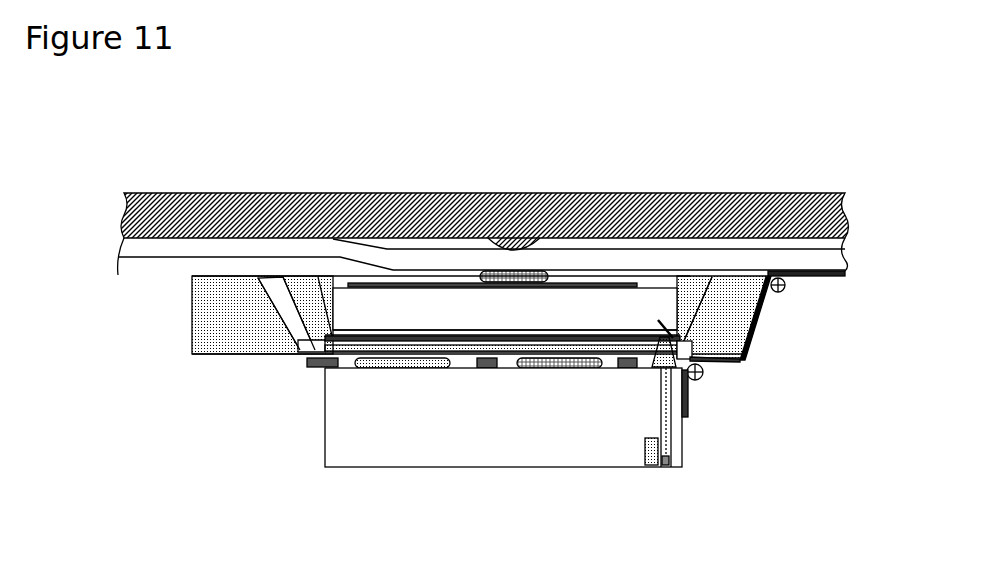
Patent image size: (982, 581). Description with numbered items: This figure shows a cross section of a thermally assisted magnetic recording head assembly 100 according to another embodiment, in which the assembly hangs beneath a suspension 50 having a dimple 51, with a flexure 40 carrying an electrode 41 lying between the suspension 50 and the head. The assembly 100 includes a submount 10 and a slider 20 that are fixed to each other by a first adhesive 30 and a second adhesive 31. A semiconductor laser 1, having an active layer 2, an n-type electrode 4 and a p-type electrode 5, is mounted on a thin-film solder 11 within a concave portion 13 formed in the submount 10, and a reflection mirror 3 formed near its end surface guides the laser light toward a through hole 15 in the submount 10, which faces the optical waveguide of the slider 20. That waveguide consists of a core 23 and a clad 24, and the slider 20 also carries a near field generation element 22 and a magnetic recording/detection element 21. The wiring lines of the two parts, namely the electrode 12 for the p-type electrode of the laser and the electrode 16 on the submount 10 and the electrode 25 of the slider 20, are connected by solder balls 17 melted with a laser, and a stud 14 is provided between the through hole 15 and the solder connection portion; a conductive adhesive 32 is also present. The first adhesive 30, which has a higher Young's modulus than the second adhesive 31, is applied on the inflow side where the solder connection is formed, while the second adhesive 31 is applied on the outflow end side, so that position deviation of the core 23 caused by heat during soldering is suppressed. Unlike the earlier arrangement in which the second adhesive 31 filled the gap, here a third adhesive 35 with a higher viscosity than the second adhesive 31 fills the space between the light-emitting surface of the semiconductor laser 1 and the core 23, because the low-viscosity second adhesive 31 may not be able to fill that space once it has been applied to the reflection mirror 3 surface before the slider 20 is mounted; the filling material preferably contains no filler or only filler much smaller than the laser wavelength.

The semiconductor laser 1 is at (657, 283).
The active layer 2 is at (418, 330).
The reflection mirror 3 is at (687, 302).
The n-type electrode of semiconductor laser 4 is at (598, 283).
The p-type electrode of semiconductor laser 5 is at (381, 336).
The submount 10 is at (190, 318).
The thin-film solder 11 is at (342, 341).
The electrode for connecting with p-type electrode of semiconductor laser 12 is at (300, 348).
The concave portion in submount 13 is at (283, 320).
The stud 14 is at (303, 358).
The through hole 15 is at (678, 350).
The electrode for connecting with slider 16 is at (741, 361).
The solder ball 17 is at (785, 289).
The slider 20 is at (346, 468).
The magnetic recording/detection element 21 is at (648, 466).
The near field generation element 22 is at (667, 466).
The core of optical waveguide 23 is at (672, 452).
The clad of optical waveguide 24 is at (670, 420).
The electrode of slider 25 is at (688, 397).
The first adhesive 30 is at (420, 362).
The second adhesive 31 is at (555, 362).
The conductive adhesive 32 is at (480, 277).
The third adhesive 35 is at (653, 364).
The flexure 40 is at (228, 251).
The electrode 41 is at (784, 270).
The suspension 50 is at (142, 191).
The dimple 51 is at (508, 247).
The thermally assisted magnetic head assembly 100 is at (302, 423).